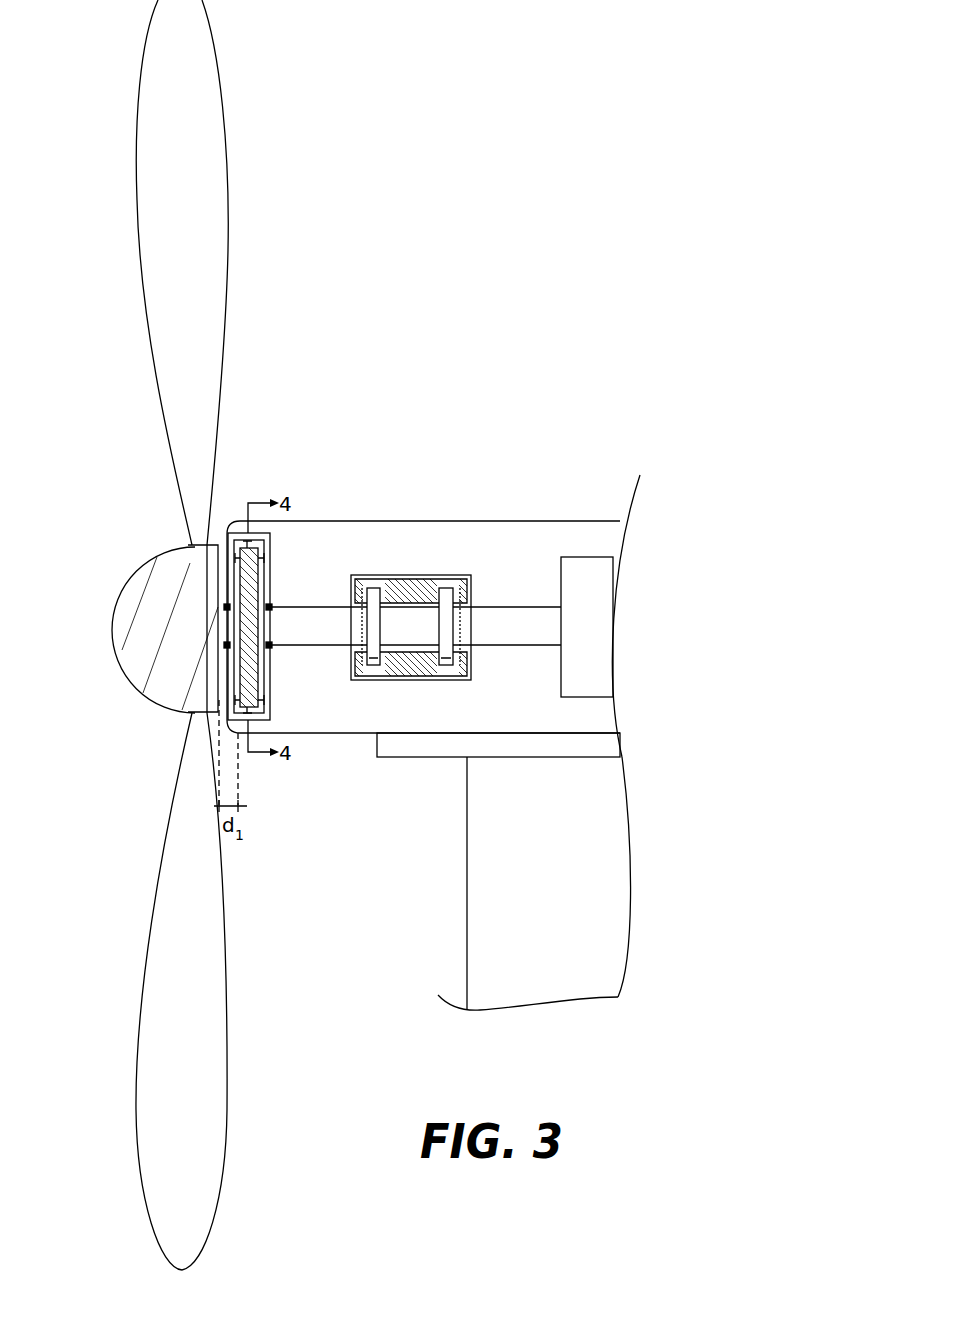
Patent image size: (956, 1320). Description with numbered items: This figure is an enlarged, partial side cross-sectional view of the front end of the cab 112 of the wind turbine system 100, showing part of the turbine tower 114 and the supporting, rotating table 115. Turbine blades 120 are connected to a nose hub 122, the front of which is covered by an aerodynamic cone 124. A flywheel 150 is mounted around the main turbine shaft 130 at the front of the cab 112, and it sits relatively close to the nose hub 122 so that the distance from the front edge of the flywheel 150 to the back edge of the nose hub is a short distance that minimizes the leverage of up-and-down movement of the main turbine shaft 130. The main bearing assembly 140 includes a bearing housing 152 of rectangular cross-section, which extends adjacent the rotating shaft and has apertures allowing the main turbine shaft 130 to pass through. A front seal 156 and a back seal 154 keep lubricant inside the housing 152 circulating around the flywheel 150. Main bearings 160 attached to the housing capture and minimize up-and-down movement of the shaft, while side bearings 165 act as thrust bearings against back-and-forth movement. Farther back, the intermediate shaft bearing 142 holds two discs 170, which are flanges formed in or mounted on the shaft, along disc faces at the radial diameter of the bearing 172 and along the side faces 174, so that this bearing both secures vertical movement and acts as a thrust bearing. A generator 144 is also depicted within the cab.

The wind turbine system 100 is at (496, 408).
The cab 112 is at (535, 521).
The turbine tower 114 is at (585, 875).
The rotating table 115 is at (495, 742).
The turbine blades 120 is at (193, 231).
The nose hub 122 is at (207, 537).
The aerodynamic cone 124 is at (117, 587).
The main turbine shaft 130 is at (308, 623).
The main bearing assembly 140 is at (226, 645).
The intermediate shaft bearing 142 is at (392, 577).
The generator 144 is at (600, 590).
The flywheel 150 is at (148, 617).
The bearing housing 152 is at (263, 676).
The back seal 154 is at (270, 647).
The front seal 156 is at (226, 607).
The main bearings 160 is at (247, 541).
The side bearings 165 is at (234, 558).
The discs 170 is at (450, 666).
The radial diameter of the bearing 172 is at (374, 589).
The side faces 174 is at (362, 600).